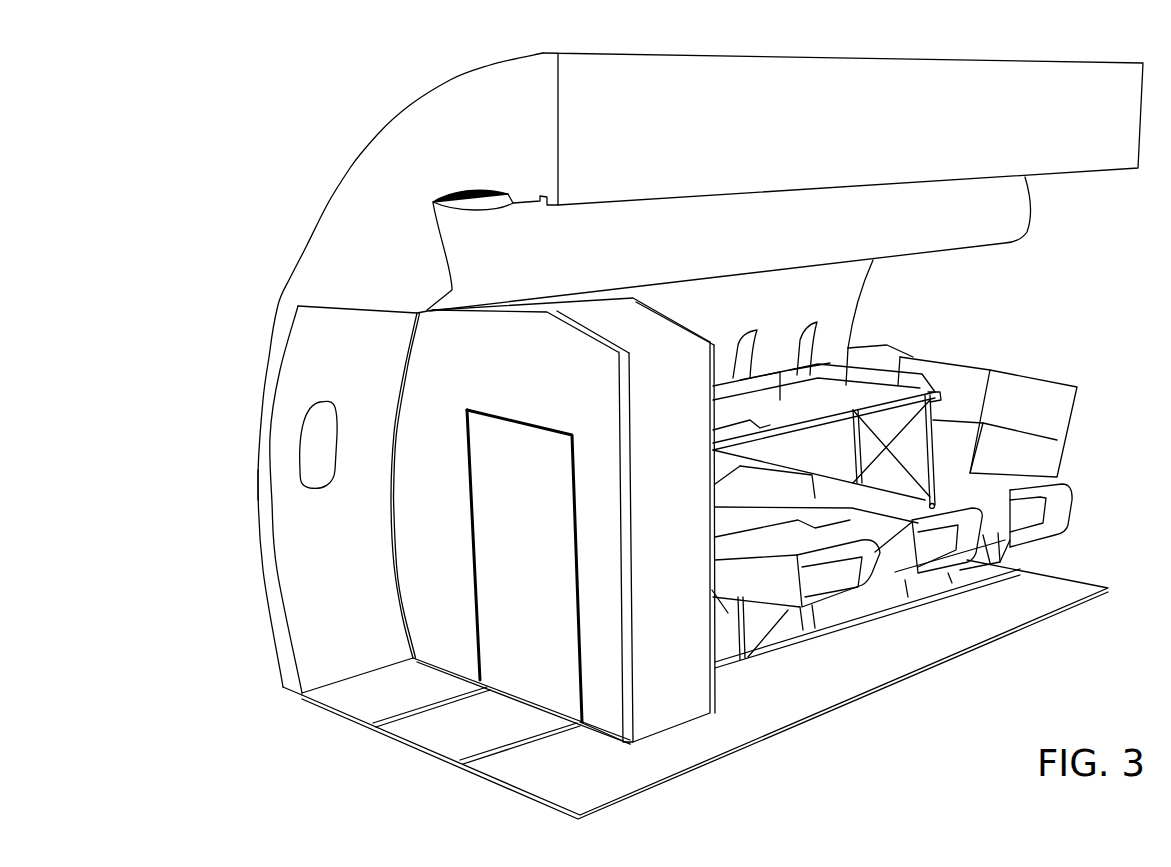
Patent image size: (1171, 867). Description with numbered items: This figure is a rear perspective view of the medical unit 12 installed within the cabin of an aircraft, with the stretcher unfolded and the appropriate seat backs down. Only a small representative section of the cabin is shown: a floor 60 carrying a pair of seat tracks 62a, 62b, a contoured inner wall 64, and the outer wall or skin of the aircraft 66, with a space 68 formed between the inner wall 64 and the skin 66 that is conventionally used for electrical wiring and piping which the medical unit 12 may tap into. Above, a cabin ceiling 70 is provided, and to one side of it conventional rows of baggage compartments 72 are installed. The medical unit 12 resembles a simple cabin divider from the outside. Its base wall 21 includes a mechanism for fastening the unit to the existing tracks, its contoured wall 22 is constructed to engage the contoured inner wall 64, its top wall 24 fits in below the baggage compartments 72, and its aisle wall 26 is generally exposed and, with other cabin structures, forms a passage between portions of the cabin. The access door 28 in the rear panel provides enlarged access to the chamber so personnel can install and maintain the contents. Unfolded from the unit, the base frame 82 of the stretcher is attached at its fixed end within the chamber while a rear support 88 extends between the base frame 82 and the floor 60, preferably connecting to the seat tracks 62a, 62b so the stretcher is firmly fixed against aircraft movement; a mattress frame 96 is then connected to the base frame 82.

The medical unit 12 is at (412, 374).
The base wall 21 is at (598, 733).
The contoured wall 22 is at (395, 588).
The top wall 24 is at (562, 300).
The aisle wall 26 is at (697, 703).
The access door 28 is at (524, 566).
The floor 60 is at (322, 708).
The seat track 62a is at (392, 736).
The seat track 62b is at (457, 758).
The inner wall 64 is at (285, 518).
The outer wall or skin of the aircraft 66 is at (258, 432).
The space 68 is at (268, 388).
The cabin ceiling 70 is at (450, 197).
The baggage compartments 72 is at (1020, 227).
The base frame 82 is at (930, 393).
The rear support 88 is at (894, 464).
The mattress frame 96 is at (898, 392).